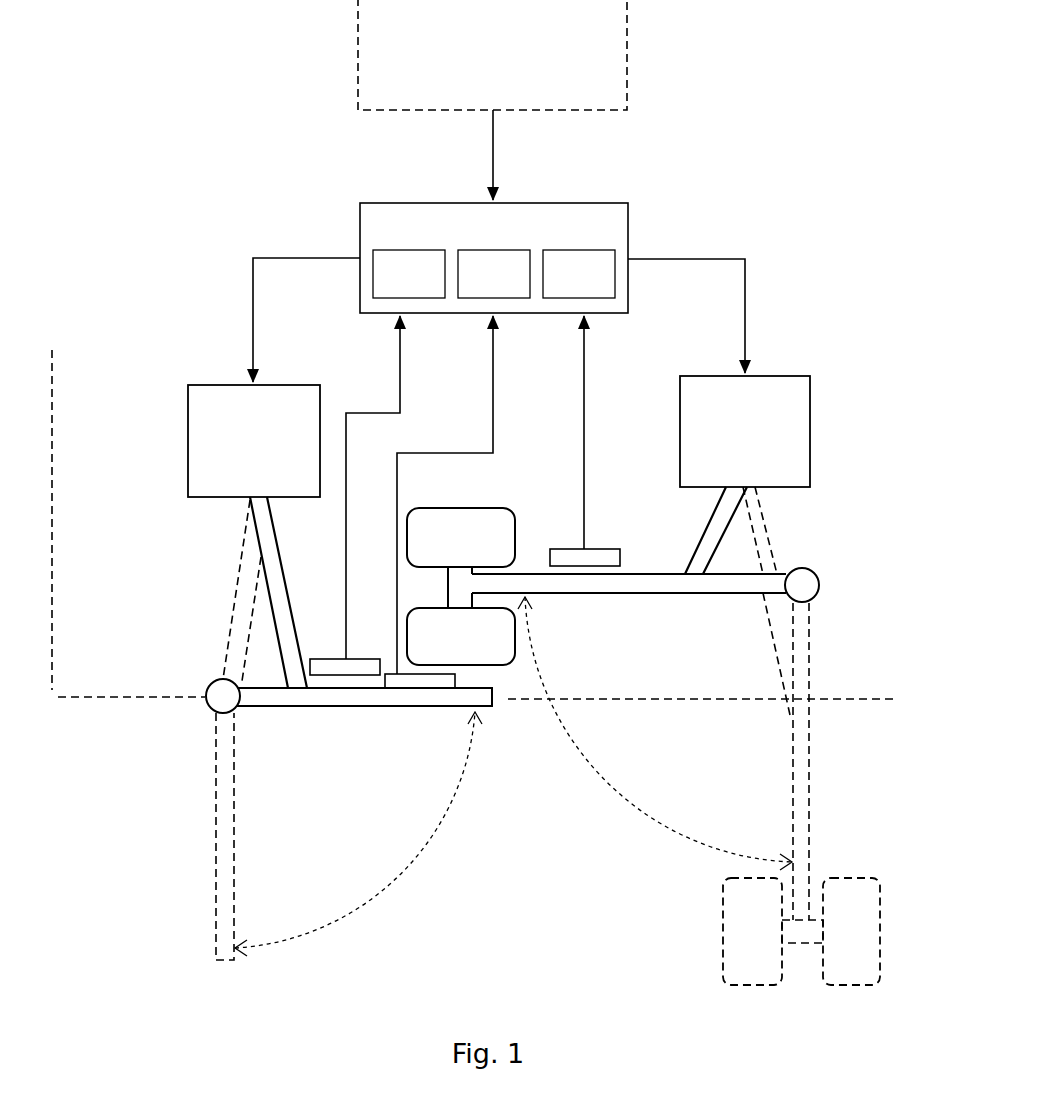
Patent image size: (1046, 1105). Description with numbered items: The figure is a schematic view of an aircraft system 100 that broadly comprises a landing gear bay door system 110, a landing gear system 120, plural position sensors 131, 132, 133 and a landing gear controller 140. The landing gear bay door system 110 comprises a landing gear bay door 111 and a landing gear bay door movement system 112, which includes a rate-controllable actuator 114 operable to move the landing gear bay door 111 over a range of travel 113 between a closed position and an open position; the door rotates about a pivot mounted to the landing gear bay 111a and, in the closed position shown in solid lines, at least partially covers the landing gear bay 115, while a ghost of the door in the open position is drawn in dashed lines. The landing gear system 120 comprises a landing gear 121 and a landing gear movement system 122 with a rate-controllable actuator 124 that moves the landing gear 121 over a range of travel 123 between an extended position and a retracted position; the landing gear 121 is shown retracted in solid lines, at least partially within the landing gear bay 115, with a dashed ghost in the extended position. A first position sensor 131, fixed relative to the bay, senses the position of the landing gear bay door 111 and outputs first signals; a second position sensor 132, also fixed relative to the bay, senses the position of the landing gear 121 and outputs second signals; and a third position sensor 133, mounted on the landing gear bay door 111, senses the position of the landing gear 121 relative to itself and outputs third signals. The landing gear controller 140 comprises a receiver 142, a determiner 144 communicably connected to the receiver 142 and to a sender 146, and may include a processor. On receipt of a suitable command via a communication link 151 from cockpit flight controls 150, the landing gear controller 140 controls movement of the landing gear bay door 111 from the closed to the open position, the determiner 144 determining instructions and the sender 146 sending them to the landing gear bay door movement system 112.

The aircraft system 100 is at (697, 194).
The landing gear bay door system 110 is at (211, 347).
The landing gear bay door 111 is at (280, 712).
The landing gear bay 111a is at (95, 697).
The landing gear bay door movement system 112 is at (172, 461).
The range of travel 113 is at (349, 931).
The rate-controllable actuator 114 is at (269, 629).
The landing gear bay 115 is at (496, 498).
The landing gear system 120 is at (789, 346).
The landing gear 121 is at (726, 601).
The landing gear movement system 122 is at (826, 461).
The range of travel 123 is at (647, 827).
The rate-controllable actuator 124 is at (717, 561).
The first position sensor 131 is at (328, 647).
The second position sensor 132 is at (606, 545).
The third position sensor 133 is at (421, 689).
The landing gear controller 140 is at (476, 240).
The receiver 142 is at (389, 287).
The determiner 144 is at (475, 287).
The sender 146 is at (560, 287).
The cockpit flight controls 150 is at (476, 68).
The communication link 151 is at (501, 178).